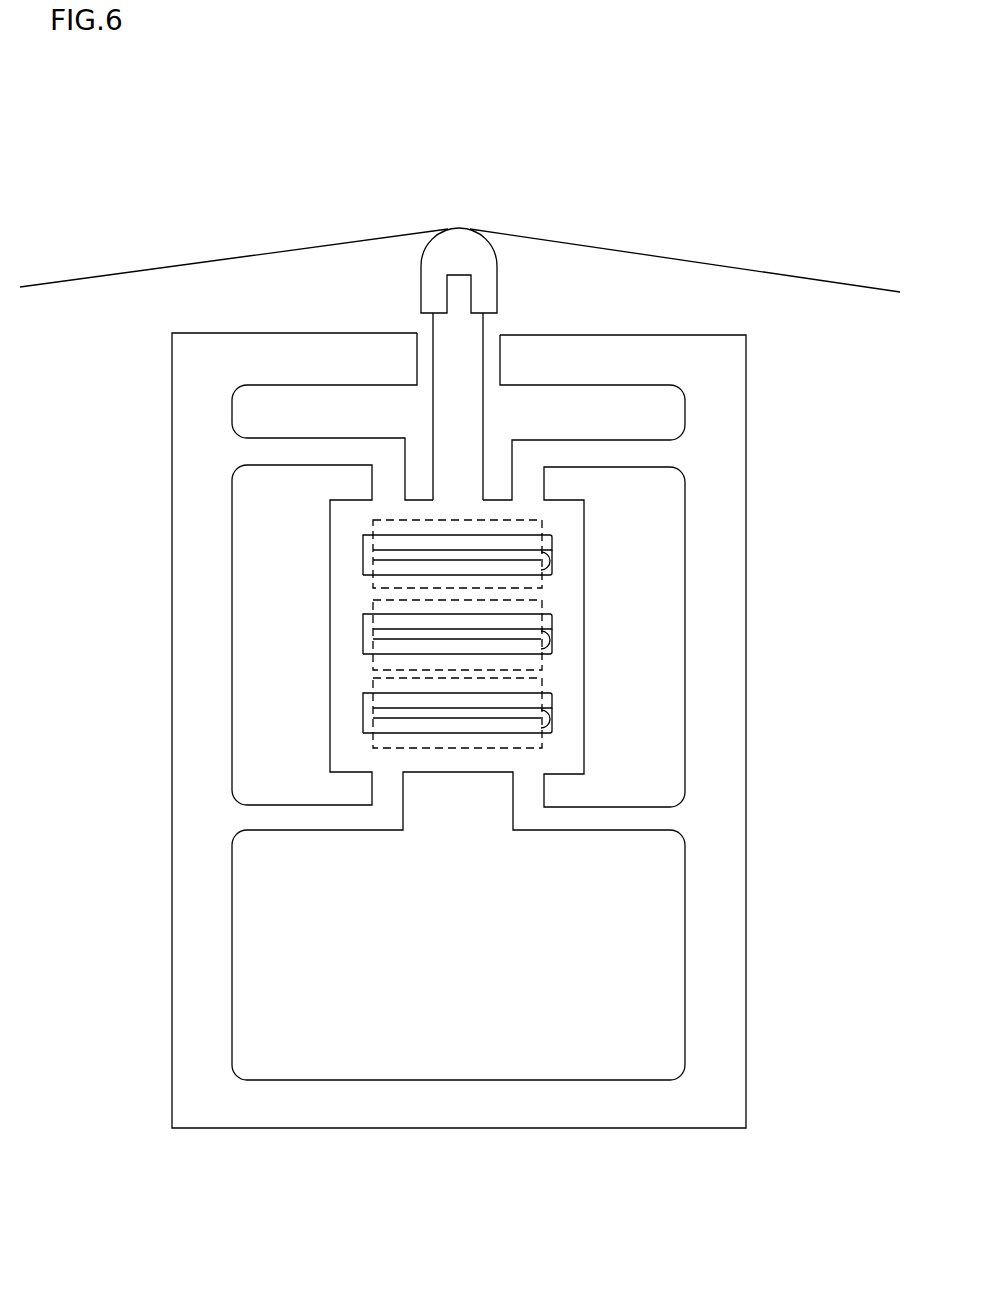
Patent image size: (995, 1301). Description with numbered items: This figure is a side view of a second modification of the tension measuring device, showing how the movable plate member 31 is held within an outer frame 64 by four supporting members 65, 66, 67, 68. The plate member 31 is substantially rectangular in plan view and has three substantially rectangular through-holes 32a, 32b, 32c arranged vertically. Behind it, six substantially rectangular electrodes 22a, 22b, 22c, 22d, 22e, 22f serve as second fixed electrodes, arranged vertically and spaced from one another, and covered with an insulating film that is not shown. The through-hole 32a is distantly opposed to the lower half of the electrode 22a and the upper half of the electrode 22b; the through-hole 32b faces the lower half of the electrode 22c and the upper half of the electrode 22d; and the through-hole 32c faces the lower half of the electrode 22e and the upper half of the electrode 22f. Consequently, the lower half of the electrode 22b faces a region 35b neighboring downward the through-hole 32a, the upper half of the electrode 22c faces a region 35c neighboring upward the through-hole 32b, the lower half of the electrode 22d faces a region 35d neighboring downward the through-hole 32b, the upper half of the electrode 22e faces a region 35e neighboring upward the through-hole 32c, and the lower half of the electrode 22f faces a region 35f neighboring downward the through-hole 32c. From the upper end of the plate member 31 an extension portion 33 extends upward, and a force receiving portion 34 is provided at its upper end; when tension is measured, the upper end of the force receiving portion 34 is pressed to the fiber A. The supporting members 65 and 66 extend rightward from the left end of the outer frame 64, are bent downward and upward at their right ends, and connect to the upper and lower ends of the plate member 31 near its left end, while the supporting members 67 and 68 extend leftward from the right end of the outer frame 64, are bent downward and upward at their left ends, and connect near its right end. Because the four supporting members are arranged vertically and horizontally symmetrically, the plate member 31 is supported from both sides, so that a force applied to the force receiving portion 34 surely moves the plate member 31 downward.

The fiber A is at (293, 248).
The electrode 22a is at (385, 540).
The electrode 22b is at (385, 570).
The electrode 22c is at (385, 620).
The electrode 22d is at (385, 647).
The electrode 22e is at (388, 700).
The electrode 22f is at (385, 725).
The plate member 31 is at (575, 545).
The through-hole 32a is at (555, 577).
The through-hole 32b is at (545, 664).
The through-hole 32c is at (545, 741).
The extension portion 33 is at (467, 407).
The force receiving portion 34 is at (468, 253).
The region 35b is at (530, 583).
The region 35c is at (513, 608).
The region 35d is at (527, 660).
The region 35e is at (527, 685).
The region 35f is at (523, 740).
The outer frame 64 is at (202, 1000).
The supporting member 65 is at (293, 452).
The supporting member 66 is at (292, 817).
The supporting member 67 is at (633, 455).
The supporting member 68 is at (620, 820).